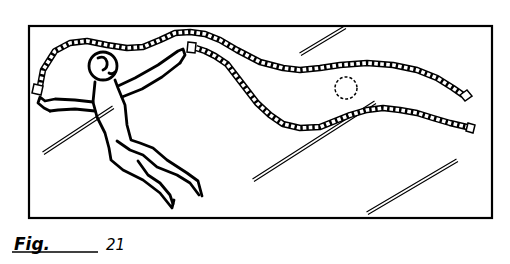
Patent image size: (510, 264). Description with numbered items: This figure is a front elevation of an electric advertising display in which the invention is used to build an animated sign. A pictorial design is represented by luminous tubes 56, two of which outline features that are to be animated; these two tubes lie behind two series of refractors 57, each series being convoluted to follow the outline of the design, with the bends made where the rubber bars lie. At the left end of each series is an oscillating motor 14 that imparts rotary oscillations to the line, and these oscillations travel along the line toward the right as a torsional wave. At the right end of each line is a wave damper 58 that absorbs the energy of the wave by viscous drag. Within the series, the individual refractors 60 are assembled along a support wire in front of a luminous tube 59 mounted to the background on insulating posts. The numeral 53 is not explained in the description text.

The oscillating motor 14 is at (44, 89).
The pool water surface 53 is at (287, 199).
The luminous tubes 56 is at (107, 74).
The series of refractors 57 is at (373, 64).
The wave damper 58 is at (467, 90).
The luminous tube 59 is at (372, 117).
The refractors 60 is at (402, 113).